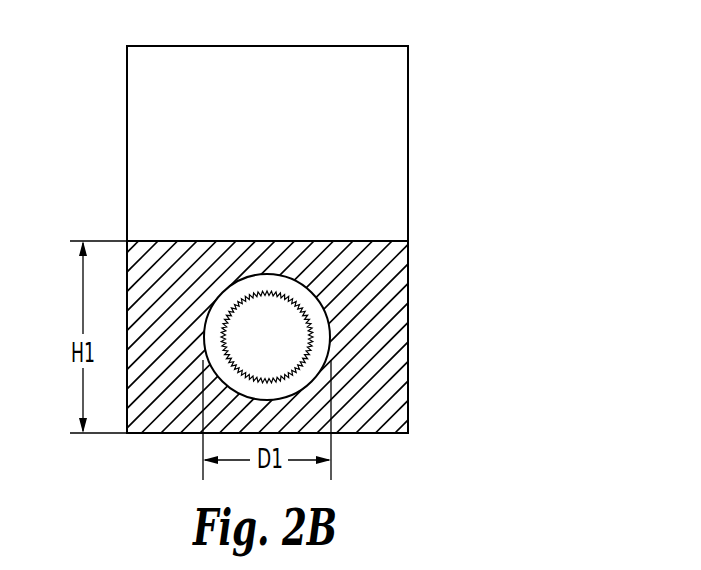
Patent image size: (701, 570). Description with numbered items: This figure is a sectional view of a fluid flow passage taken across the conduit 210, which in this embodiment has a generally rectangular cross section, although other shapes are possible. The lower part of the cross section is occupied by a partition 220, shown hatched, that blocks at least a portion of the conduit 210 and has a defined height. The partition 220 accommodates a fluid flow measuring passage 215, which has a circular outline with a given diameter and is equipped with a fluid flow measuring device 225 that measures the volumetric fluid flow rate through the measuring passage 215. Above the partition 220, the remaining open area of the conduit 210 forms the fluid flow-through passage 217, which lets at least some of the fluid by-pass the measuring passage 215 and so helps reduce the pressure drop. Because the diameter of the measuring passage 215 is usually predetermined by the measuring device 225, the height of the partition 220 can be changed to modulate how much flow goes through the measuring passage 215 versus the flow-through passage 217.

The conduit 210 is at (408, 196).
The fluid flow-through passage 217 is at (363, 133).
The partition 220 is at (392, 292).
The fluid flow measuring passage 215 is at (204, 338).
The fluid flow measuring device 225 is at (310, 347).